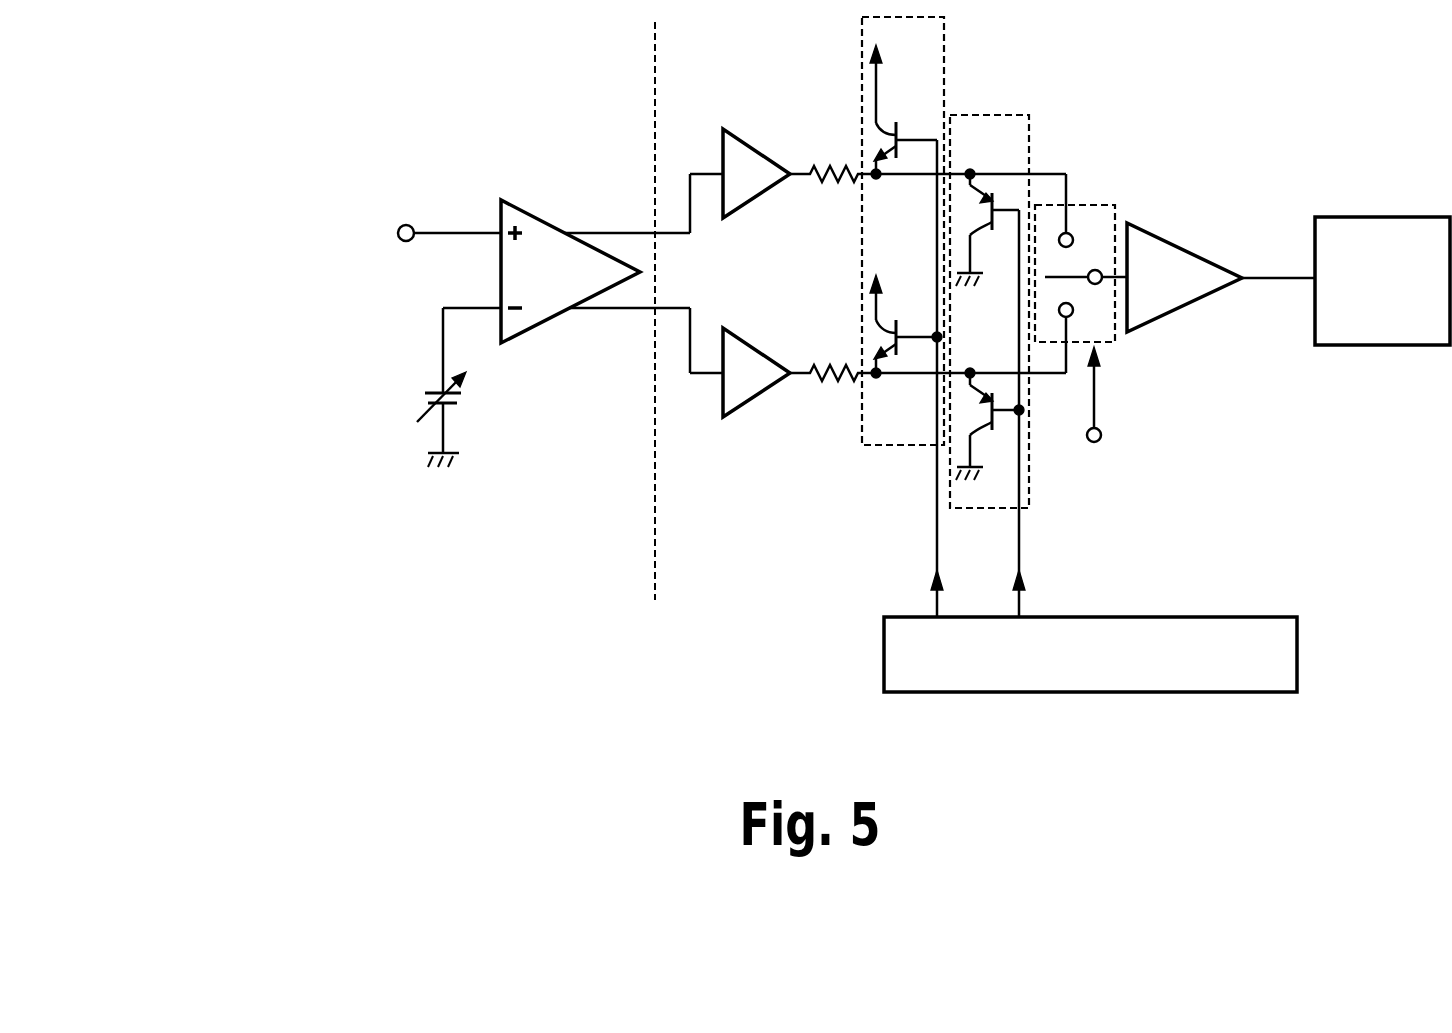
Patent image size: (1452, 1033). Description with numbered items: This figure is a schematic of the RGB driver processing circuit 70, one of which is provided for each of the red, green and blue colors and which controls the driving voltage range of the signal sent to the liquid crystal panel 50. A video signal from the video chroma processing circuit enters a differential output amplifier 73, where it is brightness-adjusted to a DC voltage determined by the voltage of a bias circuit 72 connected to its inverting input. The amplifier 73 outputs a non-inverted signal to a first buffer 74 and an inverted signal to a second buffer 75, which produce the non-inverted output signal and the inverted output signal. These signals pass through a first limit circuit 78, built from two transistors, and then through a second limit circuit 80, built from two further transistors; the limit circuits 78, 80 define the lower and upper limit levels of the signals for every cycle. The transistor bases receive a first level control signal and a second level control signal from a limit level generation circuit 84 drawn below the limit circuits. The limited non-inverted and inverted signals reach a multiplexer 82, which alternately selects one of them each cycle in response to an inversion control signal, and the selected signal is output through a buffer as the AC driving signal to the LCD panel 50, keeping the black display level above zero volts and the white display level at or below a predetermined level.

The liquid crystal panel 50 is at (1398, 217).
The RGB driver processing circuit 70 is at (810, 617).
The bias circuit 72 is at (425, 403).
The differential output amplifier 73 is at (547, 222).
The first buffer 74 is at (755, 145).
The second buffer 75 is at (755, 345).
The first limit circuit 78 is at (897, 445).
The second limit circuit 80 is at (1029, 482).
The multiplexer 82 is at (1107, 205).
The limit level generation circuit 84 is at (1298, 655).